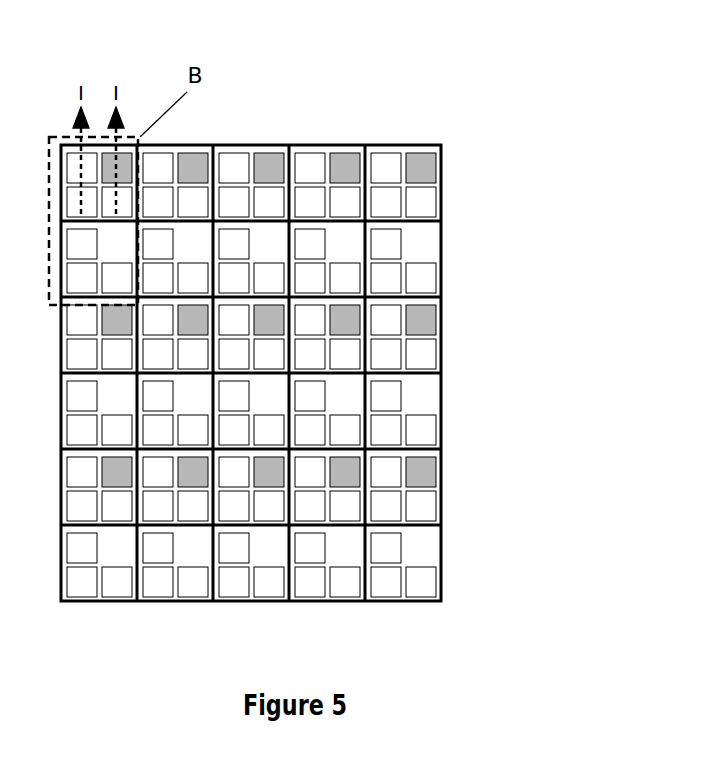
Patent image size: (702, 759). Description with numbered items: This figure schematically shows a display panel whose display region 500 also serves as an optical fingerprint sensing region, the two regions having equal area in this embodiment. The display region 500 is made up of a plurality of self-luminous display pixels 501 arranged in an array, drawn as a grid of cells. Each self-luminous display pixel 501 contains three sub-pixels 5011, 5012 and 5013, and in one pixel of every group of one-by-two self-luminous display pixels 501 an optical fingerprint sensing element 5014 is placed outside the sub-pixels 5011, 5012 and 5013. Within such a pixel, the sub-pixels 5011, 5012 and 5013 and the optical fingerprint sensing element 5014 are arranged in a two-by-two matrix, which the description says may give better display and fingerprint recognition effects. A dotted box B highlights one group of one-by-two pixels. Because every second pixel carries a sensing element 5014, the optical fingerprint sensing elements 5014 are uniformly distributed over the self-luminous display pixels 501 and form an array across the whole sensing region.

The display region 500 is at (442, 242).
The self-luminous display pixel 501 is at (387, 150).
The sub-pixel 5011 is at (386, 165).
The sub-pixel 5012 is at (382, 202).
The sub-pixel 5013 is at (428, 200).
The optical fingerprint sensing element 5014 is at (423, 170).